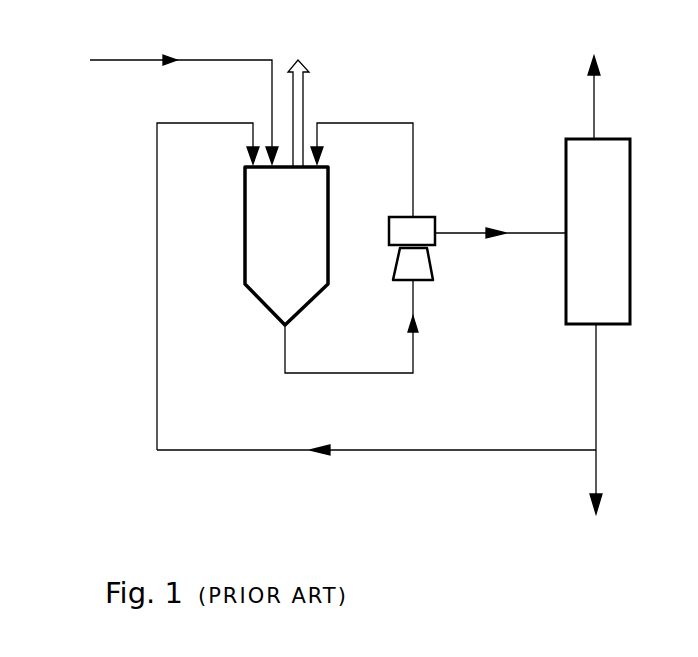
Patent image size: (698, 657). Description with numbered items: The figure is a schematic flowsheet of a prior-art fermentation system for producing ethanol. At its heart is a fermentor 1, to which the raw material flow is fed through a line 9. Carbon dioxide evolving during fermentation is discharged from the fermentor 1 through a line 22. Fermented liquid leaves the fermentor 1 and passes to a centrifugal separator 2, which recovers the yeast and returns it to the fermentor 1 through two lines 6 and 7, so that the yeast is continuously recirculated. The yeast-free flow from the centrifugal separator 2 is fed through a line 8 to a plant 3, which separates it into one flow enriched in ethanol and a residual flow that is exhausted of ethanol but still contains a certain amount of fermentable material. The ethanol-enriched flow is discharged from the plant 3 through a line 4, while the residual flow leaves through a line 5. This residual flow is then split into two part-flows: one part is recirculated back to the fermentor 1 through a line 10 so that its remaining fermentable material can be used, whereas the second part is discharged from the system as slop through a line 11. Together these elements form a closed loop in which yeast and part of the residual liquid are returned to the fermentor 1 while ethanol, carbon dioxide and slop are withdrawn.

The fermentor 1 is at (298, 218).
The centrifugal separator 2 is at (422, 231).
The plant for separation 3 is at (608, 235).
The line 4 is at (597, 92).
The line 5 is at (598, 372).
The line 6 is at (333, 373).
The line 7 is at (363, 123).
The line 8 is at (527, 233).
The line 9 is at (187, 60).
The line 10 is at (367, 450).
The line 11 is at (598, 473).
The line 22 is at (306, 83).